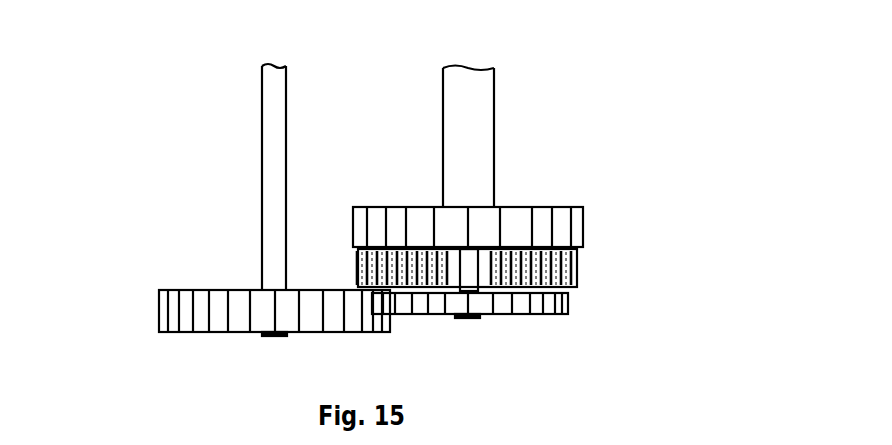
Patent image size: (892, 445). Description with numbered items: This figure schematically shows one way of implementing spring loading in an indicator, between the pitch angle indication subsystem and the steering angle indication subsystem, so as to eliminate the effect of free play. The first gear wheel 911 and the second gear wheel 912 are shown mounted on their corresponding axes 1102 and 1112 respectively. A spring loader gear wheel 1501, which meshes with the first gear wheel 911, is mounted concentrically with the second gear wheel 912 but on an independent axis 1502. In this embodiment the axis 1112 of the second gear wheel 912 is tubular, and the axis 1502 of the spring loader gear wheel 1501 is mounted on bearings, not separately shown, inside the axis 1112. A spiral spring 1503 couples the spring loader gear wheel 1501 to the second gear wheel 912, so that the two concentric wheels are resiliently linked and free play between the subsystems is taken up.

The first gear wheel 911 is at (170, 313).
The second gear wheel 912 is at (578, 226).
The axis 1102 is at (273, 244).
The axis 1112 is at (490, 140).
The spring loader gear wheel 1501 is at (566, 305).
The axis 1502 is at (470, 318).
The spiral spring 1503 is at (575, 265).